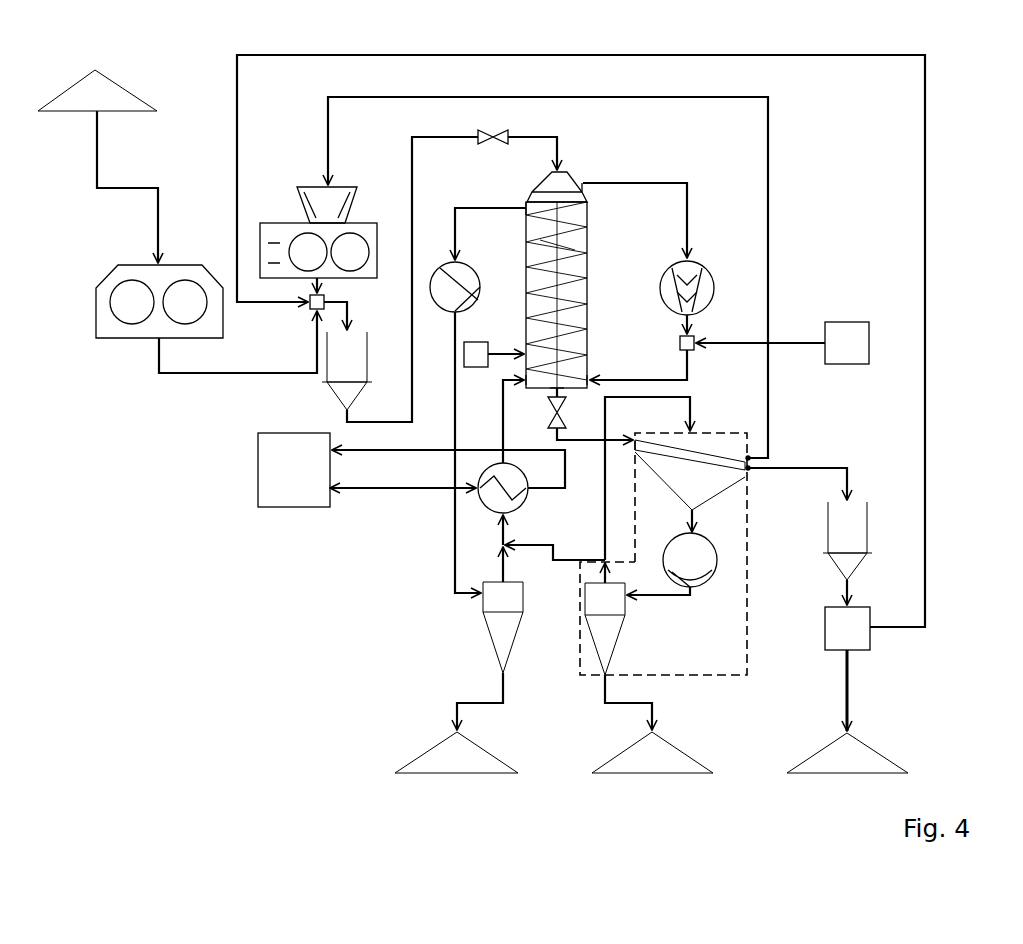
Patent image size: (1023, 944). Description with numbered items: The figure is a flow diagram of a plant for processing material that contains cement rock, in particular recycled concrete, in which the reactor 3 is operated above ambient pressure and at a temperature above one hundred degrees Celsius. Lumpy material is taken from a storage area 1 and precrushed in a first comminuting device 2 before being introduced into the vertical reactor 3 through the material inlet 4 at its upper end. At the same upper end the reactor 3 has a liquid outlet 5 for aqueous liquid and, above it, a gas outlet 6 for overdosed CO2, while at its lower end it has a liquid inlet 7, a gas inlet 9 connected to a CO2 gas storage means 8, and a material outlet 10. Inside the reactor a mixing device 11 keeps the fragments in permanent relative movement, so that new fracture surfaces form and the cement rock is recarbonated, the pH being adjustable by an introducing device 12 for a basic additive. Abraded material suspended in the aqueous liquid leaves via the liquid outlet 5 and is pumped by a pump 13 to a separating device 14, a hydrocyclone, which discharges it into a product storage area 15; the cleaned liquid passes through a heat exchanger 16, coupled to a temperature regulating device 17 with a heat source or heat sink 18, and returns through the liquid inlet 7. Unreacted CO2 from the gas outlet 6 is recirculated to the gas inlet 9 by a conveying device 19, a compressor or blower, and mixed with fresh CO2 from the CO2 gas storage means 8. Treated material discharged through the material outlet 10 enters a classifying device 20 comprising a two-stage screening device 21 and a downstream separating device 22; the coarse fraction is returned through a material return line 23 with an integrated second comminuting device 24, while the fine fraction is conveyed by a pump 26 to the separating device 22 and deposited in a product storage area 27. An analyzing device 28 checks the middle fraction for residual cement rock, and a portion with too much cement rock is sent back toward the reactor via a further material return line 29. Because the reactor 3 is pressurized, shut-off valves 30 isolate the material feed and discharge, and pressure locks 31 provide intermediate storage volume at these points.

The storage area 1 is at (88, 90).
The first comminuting device 2 is at (117, 287).
The reactor 3 is at (580, 297).
The material inlet 4 is at (565, 168).
The liquid outlet 5 is at (527, 207).
The gas outlet 6 is at (578, 184).
The liquid inlet 7 is at (527, 381).
The CO2 gas storage means 8 is at (855, 353).
The gas inlet 9 is at (590, 380).
The material outlet 10 is at (557, 388).
The mixing device 11 is at (570, 248).
The introducing device 12 is at (480, 342).
The pump 13 is at (458, 285).
The separating device 14 is at (502, 640).
The product storage area 15 is at (478, 763).
The heat exchanger 16 is at (517, 498).
The temperature regulating device 17 is at (353, 488).
The heat source or heat sink 18 is at (272, 480).
The conveying device 19 is at (695, 275).
The classifying device 20 is at (748, 532).
The screening device 21 is at (712, 483).
The separating device 22 is at (607, 640).
The material return line 23 is at (770, 203).
The second comminuting device 24 is at (315, 197).
The pump 26 is at (692, 562).
The product storage area 27 is at (675, 760).
The analyzing device 28 is at (852, 628).
The material return line 29 is at (920, 255).
The shut-off valve 30 is at (491, 139).
The pressure lock 31 is at (347, 365).